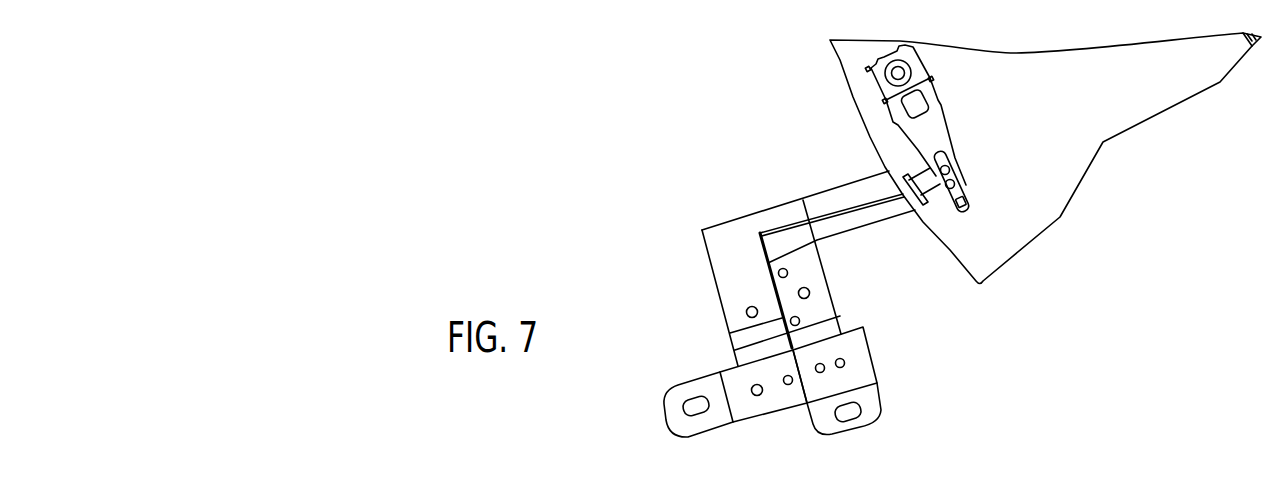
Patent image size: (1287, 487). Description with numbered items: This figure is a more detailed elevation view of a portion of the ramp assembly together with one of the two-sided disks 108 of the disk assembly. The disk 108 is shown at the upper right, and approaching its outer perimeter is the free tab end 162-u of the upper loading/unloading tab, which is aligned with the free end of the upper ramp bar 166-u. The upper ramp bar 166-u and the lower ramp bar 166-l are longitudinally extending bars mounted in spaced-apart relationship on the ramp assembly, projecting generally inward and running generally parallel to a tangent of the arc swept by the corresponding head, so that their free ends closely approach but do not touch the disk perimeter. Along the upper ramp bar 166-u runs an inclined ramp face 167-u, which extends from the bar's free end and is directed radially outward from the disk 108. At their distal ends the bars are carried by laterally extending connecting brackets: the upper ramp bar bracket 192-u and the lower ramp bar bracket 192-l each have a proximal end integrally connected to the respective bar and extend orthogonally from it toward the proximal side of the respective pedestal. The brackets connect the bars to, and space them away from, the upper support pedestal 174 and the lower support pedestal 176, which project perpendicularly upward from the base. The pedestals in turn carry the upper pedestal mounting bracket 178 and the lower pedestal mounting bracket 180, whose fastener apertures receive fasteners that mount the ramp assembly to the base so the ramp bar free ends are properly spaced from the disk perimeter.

The disk 108 is at (1033, 158).
The free tab end 162-u is at (922, 207).
The lower ramp bar 166-l is at (866, 189).
The upper ramp bar 166-u is at (848, 233).
The inclined ramp face 167-u is at (895, 199).
The lower ramp bar bracket 192-l is at (717, 285).
The upper ramp bar bracket 192-u is at (850, 312).
The upper support pedestal 174 is at (878, 363).
The lower support pedestal 176 is at (760, 407).
The upper pedestal mounting bracket 178 is at (856, 433).
The lower pedestal mounting bracket 180 is at (684, 435).